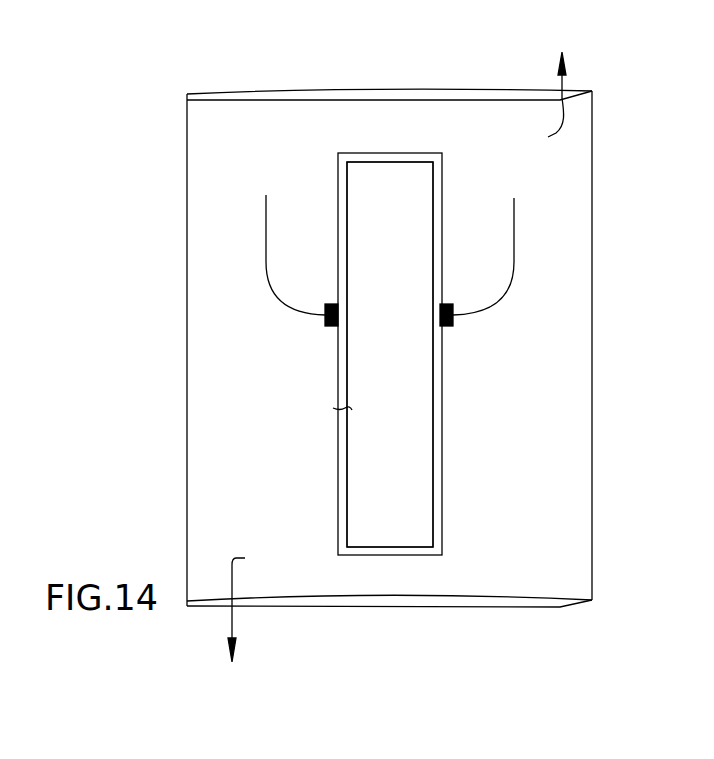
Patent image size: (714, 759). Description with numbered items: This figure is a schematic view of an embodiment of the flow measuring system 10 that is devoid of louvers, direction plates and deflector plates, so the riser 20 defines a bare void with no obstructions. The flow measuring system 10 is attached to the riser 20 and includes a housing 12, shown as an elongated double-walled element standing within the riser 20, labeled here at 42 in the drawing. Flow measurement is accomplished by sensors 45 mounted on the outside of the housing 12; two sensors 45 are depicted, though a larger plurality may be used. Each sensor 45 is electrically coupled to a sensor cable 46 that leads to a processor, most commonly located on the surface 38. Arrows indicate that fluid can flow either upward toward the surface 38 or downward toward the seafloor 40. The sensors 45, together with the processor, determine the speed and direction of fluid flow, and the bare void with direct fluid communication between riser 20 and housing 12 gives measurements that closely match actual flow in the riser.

The flow measuring system 10 is at (304, 179).
The housing 12 is at (445, 500).
The riser 20 is at (303, 108).
The surface 38 is at (541, 101).
The seafloor 40 is at (253, 606).
The light emitting region 42 is at (395, 225).
The sensor 45 is at (331, 328).
The sensor cable 46 is at (390, 255).